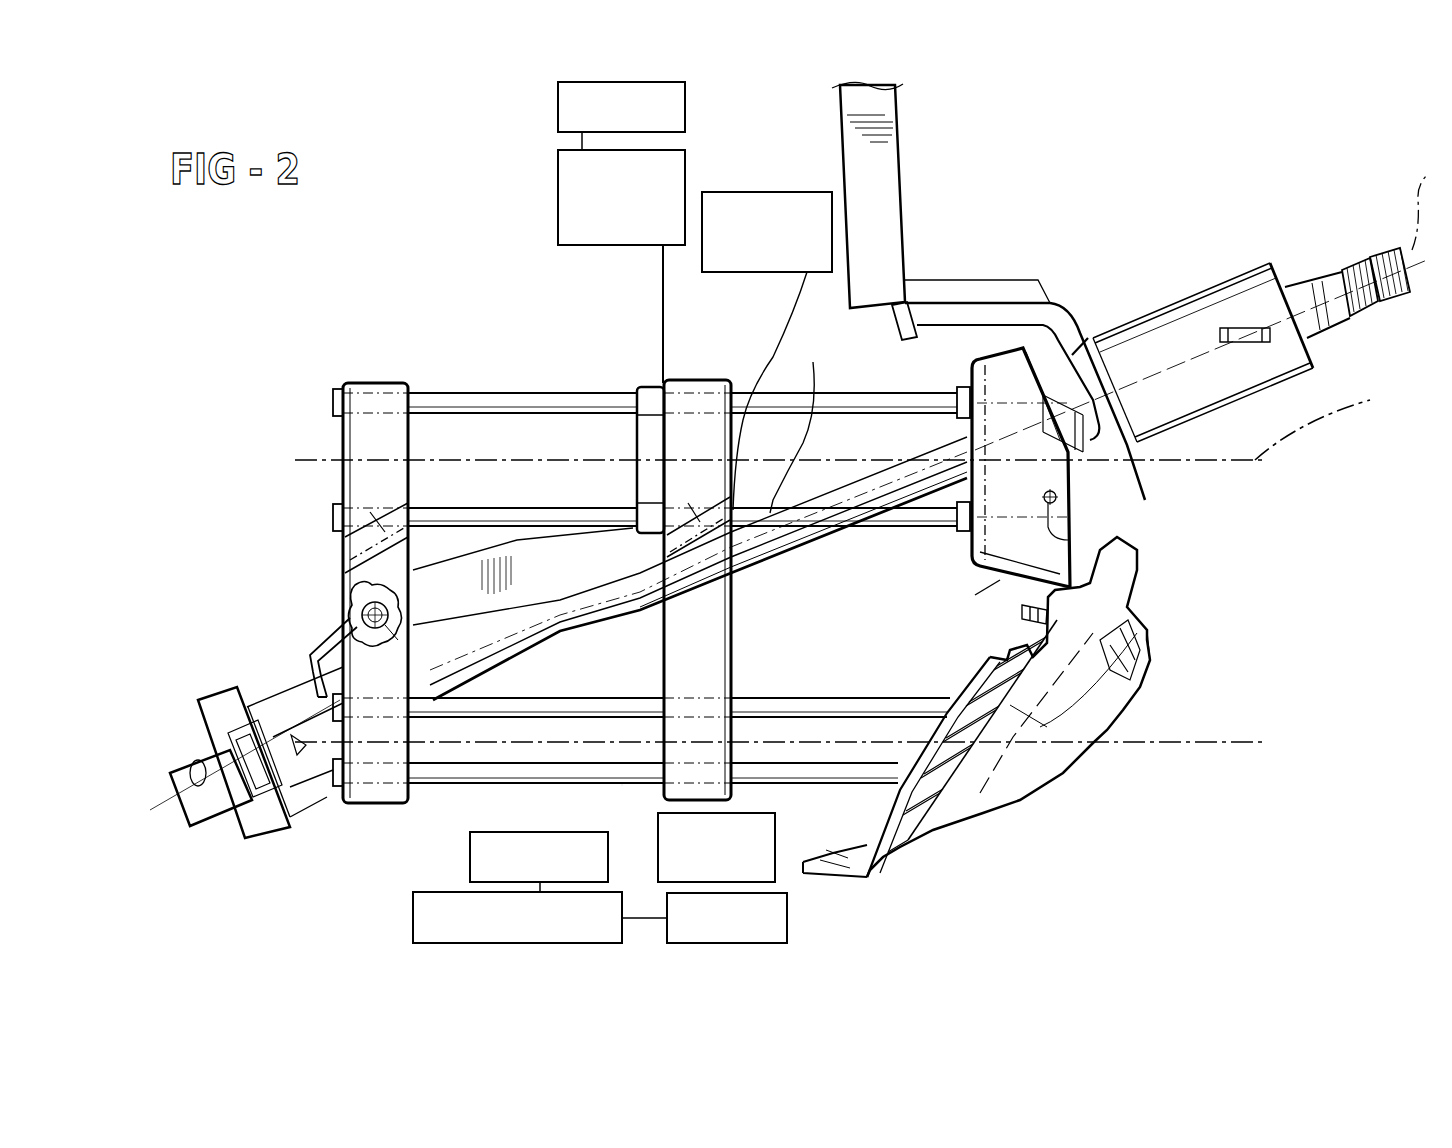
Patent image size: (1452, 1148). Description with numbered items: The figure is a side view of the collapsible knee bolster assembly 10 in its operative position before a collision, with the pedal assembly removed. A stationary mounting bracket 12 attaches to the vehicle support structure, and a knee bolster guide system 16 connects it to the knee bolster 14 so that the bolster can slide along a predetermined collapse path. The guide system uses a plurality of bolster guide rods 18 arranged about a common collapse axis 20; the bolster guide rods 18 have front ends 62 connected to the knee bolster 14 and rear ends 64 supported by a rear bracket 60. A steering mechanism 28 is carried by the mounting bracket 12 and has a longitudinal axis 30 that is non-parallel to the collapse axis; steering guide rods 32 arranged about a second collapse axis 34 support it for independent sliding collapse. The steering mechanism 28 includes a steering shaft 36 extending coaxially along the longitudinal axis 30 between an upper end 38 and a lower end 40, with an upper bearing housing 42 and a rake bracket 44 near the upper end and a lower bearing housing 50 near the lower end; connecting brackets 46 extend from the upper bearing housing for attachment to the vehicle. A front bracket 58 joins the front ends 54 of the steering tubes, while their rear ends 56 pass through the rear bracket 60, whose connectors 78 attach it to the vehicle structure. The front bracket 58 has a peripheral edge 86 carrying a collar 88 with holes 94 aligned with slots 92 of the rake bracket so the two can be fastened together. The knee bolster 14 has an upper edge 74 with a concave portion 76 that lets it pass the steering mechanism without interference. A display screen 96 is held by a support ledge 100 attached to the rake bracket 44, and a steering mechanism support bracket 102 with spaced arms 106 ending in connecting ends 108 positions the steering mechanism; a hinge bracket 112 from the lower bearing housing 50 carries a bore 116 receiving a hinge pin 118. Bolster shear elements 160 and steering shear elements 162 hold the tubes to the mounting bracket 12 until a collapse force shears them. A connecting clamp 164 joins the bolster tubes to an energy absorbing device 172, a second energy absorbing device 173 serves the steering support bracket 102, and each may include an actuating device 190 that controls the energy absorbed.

The collapsible knee bolster assembly 10 is at (973, 182).
The mounting bracket 12 is at (688, 378).
The knee bolster 14 is at (985, 820).
The knee bolster guide system 16 is at (622, 789).
The bolster guide rods 18 is at (797, 697).
The collapse axis 20 is at (1215, 742).
The steering mechanism 28 is at (1228, 278).
The longitudinal axis 30 is at (1422, 201).
The steering guide rods 32 is at (783, 397).
The second collapse axis 34 is at (1329, 424).
The steering shaft 36 is at (605, 593).
The upper end 38 is at (1372, 258).
The lower end 40 is at (205, 812).
The upper bearing housing 42 is at (1183, 307).
The rake bracket 44 is at (1097, 330).
The connecting brackets 46 is at (1240, 330).
The lower bearing housing 50 is at (248, 818).
The front ends 54 is at (957, 398).
The rear ends 56 is at (335, 392).
The front bracket 58 is at (992, 352).
The rear bracket 60 is at (385, 383).
The front ends 62 is at (888, 768).
The rear ends 64 is at (333, 712).
The upper edge 74 is at (1125, 545).
The concave portion 76 is at (1140, 650).
The connectors 78 is at (715, 505).
The peripheral edge 86 is at (1000, 572).
The collar 88 is at (1030, 614).
The slot 92 is at (1080, 500).
The holes 94 is at (1070, 530).
The display screen 96 is at (840, 117).
The support ledge 100 is at (983, 283).
The steering mechanism support bracket 102 is at (641, 387).
The arms 106 is at (548, 507).
The connecting ends 108 is at (362, 592).
The hinge bracket 112 is at (312, 643).
The bore 116 is at (385, 625).
The hinge pin 118 is at (365, 613).
The bolster shear elements 160 is at (775, 870).
The steering shear elements 162 is at (735, 192).
The connecting clamp 164 is at (470, 855).
The energy absorbing device 172 is at (413, 905).
The second energy absorbing device 173 is at (558, 200).
The actuating device 190 is at (558, 115).